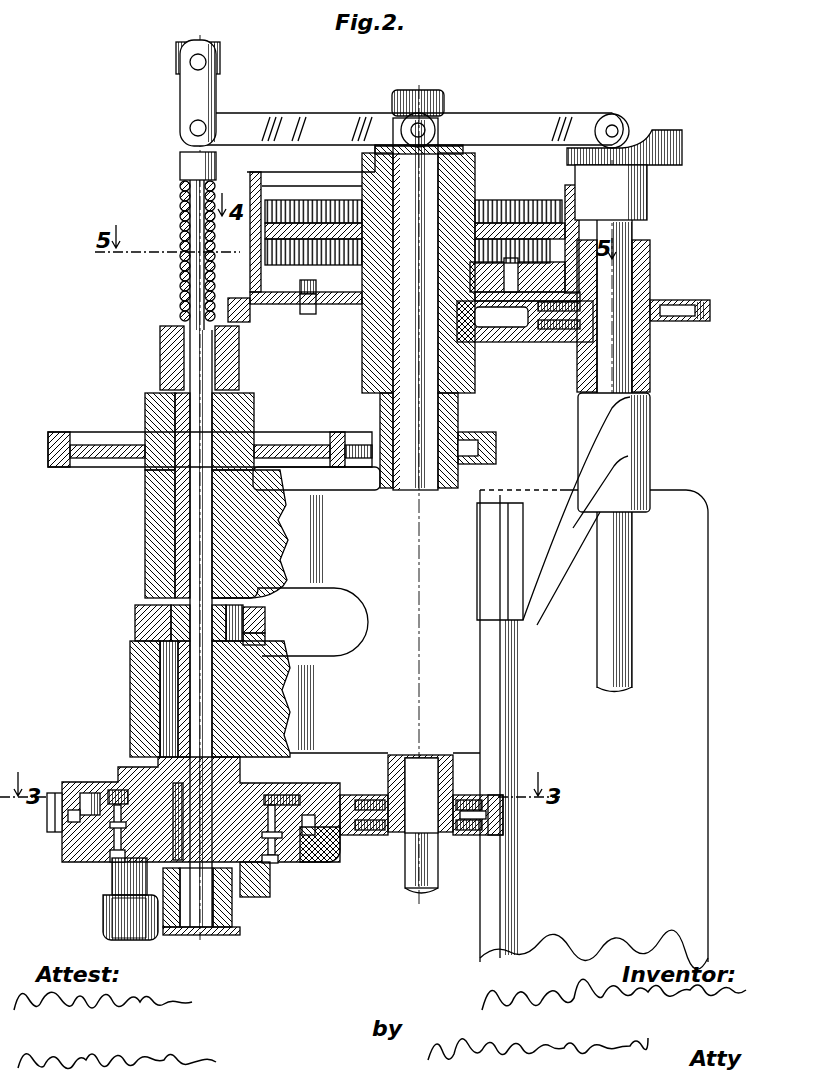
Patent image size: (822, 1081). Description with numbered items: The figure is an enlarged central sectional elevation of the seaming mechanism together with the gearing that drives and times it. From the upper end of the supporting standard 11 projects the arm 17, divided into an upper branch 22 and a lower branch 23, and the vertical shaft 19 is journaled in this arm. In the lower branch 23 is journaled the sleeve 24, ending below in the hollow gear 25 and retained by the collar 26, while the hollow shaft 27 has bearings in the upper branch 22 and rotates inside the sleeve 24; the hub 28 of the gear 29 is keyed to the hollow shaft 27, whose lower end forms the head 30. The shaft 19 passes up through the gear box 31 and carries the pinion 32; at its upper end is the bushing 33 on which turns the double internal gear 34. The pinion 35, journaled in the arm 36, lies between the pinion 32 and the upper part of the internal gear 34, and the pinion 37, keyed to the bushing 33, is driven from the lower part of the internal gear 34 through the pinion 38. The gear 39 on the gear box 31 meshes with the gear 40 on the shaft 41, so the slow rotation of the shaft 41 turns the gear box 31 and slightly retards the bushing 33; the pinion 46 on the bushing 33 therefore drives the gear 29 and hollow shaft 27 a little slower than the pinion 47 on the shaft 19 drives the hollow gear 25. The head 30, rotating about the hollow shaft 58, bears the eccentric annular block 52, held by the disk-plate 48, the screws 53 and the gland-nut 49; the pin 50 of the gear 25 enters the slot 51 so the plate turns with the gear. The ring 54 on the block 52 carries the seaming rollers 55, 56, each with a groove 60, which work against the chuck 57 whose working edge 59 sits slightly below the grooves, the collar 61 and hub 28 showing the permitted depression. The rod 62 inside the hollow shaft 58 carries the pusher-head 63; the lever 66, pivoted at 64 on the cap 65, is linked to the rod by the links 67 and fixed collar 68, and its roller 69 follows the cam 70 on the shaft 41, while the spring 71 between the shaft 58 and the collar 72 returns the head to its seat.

The supporting standard 11 is at (685, 733).
The arm or bracket 17 is at (388, 612).
The vertical shaft 19 is at (420, 408).
The upper branch 22 is at (148, 518).
The lower branch 23 is at (132, 682).
The sleeve or cylinder 24 is at (168, 722).
The hollow gear 25 is at (312, 790).
The collar 26 is at (255, 622).
The sleeve or hollow shaft 27 is at (180, 558).
The hub 28 is at (240, 418).
The gear 29 is at (300, 442).
The head 30 is at (288, 878).
The gear box or cylinder casing 31 is at (250, 258).
The pinion 32 is at (445, 188).
The sleeve or bushing 33 is at (455, 360).
The double internal gear 34 is at (326, 262).
The pinion 35 is at (470, 218).
The arm 36 is at (463, 160).
The pinion 37 is at (372, 312).
The pinion 38 is at (490, 280).
The gear 39 is at (226, 308).
The gear 40 is at (705, 312).
The shaft 41 is at (612, 343).
The pinion 46 is at (496, 450).
The pinion 47 is at (478, 835).
The annular disk-plate 48 is at (296, 862).
The gland-nut 49 is at (112, 828).
The pin 50 is at (92, 795).
The slot 51 is at (70, 816).
The annular block 52 is at (58, 830).
The screws 53 is at (116, 830).
The ring 54 is at (255, 897).
The seaming roller 55 is at (108, 918).
The seaming roller 56 is at (148, 890).
The chuck 57 is at (182, 936).
The hollow shaft 58 is at (160, 345).
The working edge 59 is at (238, 936).
The groove 60 is at (115, 938).
The collar 61 is at (225, 358).
The rod 62 is at (196, 278).
The pusher-head 63 is at (210, 936).
The pivot 64 is at (422, 128).
The cap 65 is at (420, 104).
The lever 66 is at (298, 122).
The links 67 is at (190, 98).
The fixed collar 68 is at (216, 52).
The roller 69 is at (620, 122).
The cam 70 is at (668, 136).
The spring 71 is at (180, 222).
The collar 72 is at (188, 166).